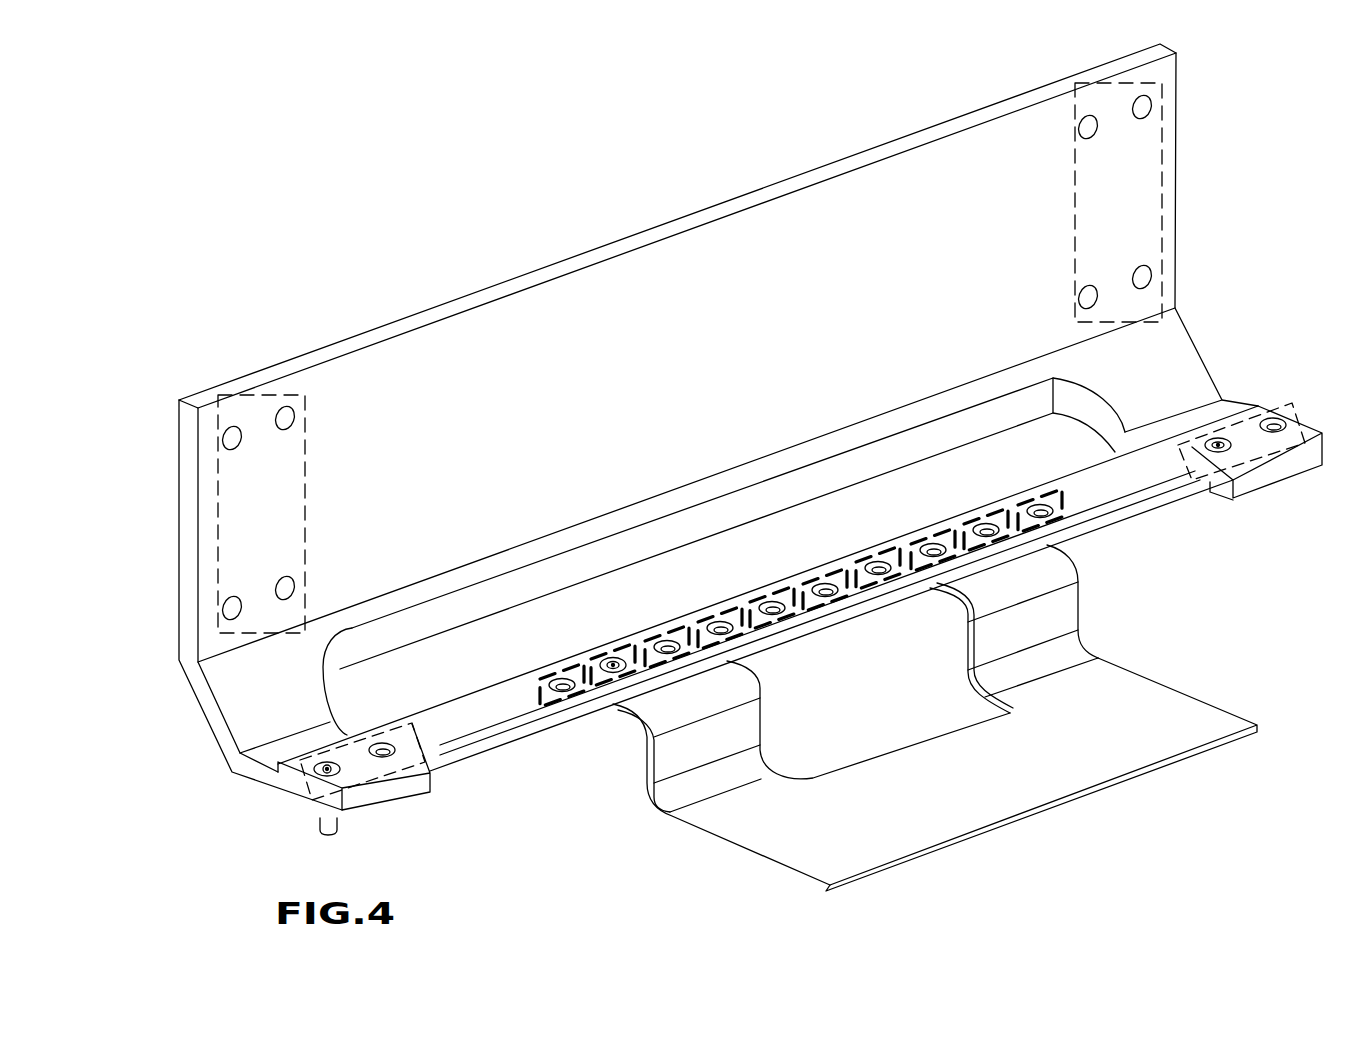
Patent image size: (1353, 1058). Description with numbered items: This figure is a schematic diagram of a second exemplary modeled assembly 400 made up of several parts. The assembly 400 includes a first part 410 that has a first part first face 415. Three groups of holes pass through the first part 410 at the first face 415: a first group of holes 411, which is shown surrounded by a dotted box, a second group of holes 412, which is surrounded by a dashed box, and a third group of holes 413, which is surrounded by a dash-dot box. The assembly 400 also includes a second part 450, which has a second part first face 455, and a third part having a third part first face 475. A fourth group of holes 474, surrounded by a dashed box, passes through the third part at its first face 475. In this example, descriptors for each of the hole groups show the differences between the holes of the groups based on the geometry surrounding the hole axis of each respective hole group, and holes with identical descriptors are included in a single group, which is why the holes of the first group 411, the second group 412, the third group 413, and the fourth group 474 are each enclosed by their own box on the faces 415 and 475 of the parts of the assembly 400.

The assembly 400 is at (178, 301).
The first part 410 is at (483, 745).
The first group of holes 411 is at (394, 728).
The second group of holes 412 is at (665, 633).
The third group of holes 413 is at (565, 672).
The first part first face 415 is at (498, 731).
The second part 450 is at (869, 872).
The second part first face 455 is at (1010, 787).
The fourth group of holes 474 is at (255, 397).
The third part first face 475 is at (747, 371).